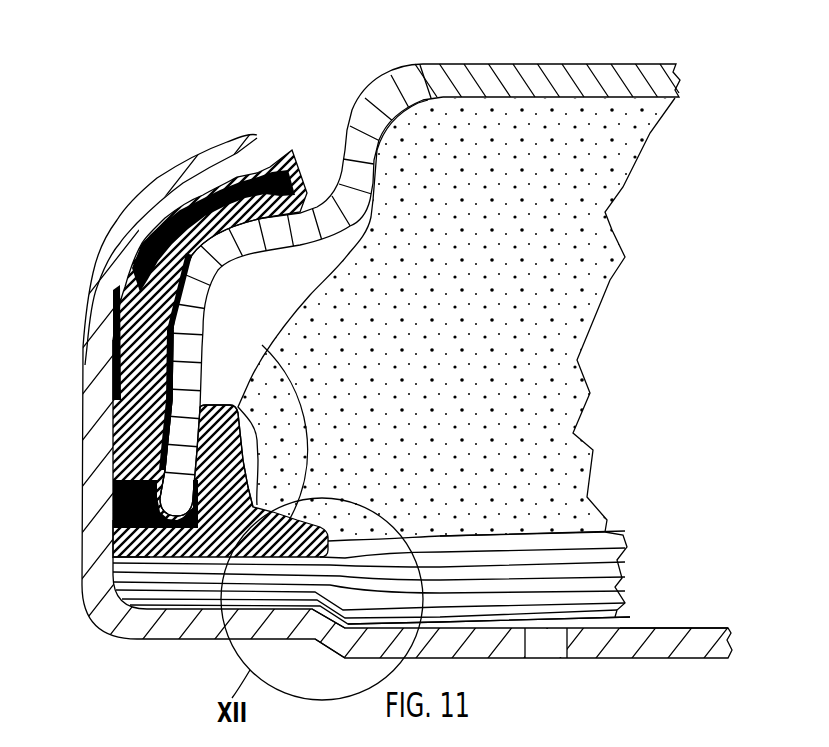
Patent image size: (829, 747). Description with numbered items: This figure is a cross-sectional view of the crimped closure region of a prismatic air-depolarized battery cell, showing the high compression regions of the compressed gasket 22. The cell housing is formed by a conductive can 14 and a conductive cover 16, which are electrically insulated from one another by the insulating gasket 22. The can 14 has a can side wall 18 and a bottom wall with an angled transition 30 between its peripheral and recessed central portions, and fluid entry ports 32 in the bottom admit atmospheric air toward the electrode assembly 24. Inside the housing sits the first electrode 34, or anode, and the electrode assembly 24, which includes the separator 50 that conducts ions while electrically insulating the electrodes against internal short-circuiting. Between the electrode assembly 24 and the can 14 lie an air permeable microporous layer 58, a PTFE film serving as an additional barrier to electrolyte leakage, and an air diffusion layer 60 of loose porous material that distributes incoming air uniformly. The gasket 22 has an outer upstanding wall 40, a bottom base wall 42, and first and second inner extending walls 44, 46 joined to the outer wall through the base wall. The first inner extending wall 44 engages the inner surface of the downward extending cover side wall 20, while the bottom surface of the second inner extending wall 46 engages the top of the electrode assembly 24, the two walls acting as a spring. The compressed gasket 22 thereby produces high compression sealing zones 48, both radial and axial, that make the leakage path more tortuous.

The can 14 is at (157, 639).
The cover 16 is at (491, 63).
The can side wall 18 is at (117, 213).
The cover side wall 20 is at (205, 331).
The gasket 22 is at (120, 282).
The electrode assembly 24 is at (641, 532).
The transition 30 is at (302, 630).
The fluid entry ports 32 is at (541, 650).
The first electrode 34 is at (620, 155).
The outer upstanding wall 40 is at (110, 373).
The bottom base wall 42 is at (110, 540).
The first inner extending wall 44 is at (244, 408).
The second inner extending wall 46 is at (263, 350).
The high compression sealing zones 48 is at (198, 238).
The separator 50 is at (632, 531).
The microporous layer 58 is at (620, 613).
The air diffusion layer 60 is at (689, 621).